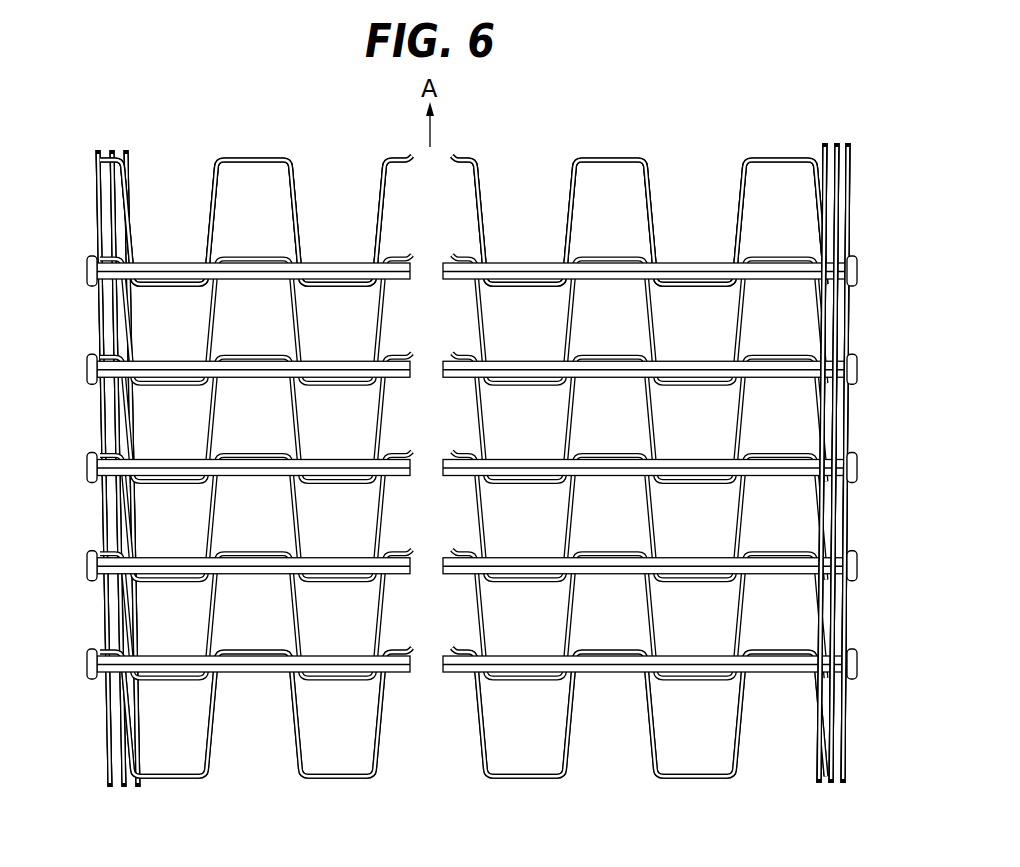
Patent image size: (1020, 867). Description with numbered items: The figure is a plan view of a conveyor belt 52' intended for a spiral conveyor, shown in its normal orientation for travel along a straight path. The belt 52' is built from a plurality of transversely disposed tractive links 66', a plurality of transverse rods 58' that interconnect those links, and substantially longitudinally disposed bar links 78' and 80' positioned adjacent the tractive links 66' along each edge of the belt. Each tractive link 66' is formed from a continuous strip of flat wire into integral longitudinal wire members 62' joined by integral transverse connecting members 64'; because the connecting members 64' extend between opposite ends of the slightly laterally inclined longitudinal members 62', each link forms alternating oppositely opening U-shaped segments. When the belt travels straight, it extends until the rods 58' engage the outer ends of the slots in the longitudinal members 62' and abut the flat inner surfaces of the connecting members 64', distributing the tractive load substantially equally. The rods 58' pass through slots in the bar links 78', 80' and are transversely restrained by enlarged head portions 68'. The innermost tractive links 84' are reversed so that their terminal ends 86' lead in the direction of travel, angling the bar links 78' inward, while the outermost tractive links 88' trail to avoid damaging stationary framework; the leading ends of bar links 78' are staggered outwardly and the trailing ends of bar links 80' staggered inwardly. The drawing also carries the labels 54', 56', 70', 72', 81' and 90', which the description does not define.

The conveyor belt 52' is at (467, 458).
The first side edge of belt 54' is at (107, 452).
The second side edge of belt 56' is at (859, 473).
The transverse rods 58' is at (471, 467).
The longitudinal wire members 62' is at (463, 466).
The transverse connecting members 64' is at (463, 666).
The tractive links 66' is at (463, 200).
The enlarged head portions 68' is at (470, 467).
The end loop of first wire 70' is at (256, 201).
The end loop of second wire 72' is at (639, 200).
The bar links 78' is at (91, 468).
The bar links 80' is at (859, 463).
The edge link sleeve 81' is at (859, 463).
The innermost tractive links 84' is at (96, 468).
The terminal ends 86' is at (139, 452).
The outermost tractive links 88' is at (858, 448).
The wire end 90' is at (848, 488).